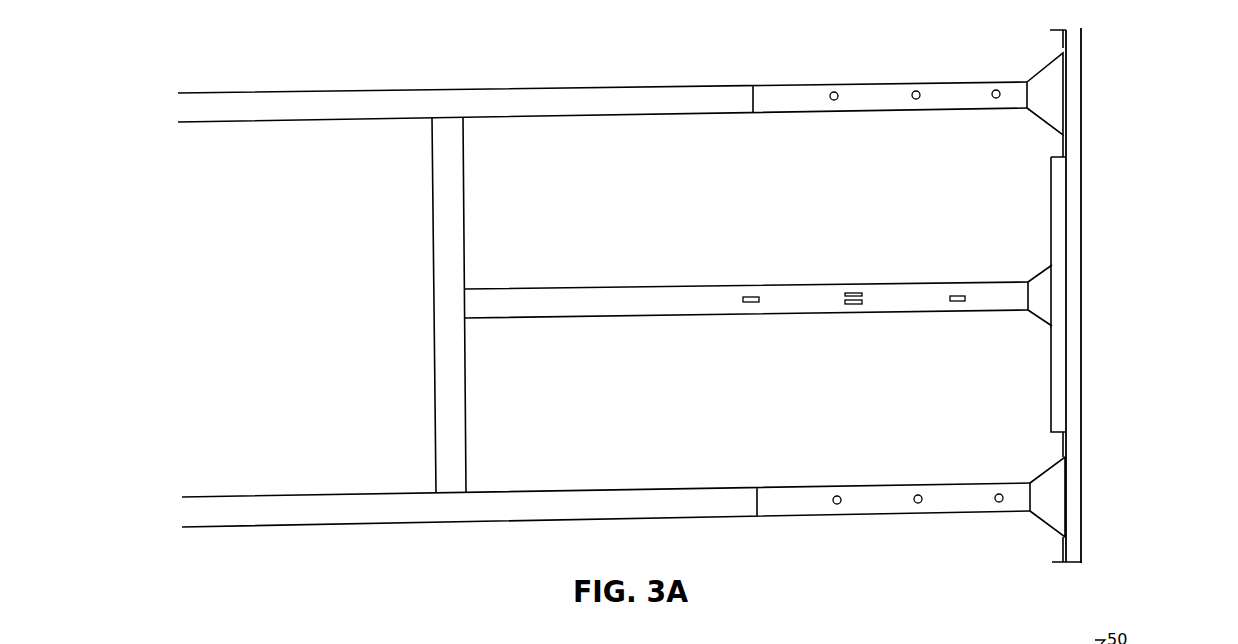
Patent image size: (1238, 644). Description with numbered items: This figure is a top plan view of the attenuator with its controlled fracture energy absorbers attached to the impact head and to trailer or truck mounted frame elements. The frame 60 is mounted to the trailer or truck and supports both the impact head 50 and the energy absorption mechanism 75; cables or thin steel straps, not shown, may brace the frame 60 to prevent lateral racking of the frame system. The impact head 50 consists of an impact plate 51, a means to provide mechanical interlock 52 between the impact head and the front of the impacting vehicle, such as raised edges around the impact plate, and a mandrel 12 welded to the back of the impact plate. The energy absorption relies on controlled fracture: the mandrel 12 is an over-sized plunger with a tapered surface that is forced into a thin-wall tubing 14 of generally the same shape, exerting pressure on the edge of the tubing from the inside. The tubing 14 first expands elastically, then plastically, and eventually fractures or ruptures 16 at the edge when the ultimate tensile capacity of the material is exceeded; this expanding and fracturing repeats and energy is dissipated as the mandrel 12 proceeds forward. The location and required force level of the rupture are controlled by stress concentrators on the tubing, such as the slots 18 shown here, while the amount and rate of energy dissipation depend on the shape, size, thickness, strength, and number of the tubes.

The mandrel 12 is at (1038, 320).
The thin-wall tubing 14 is at (660, 286).
The fracture 16 is at (913, 100).
The slots 18 is at (752, 297).
The impact head 50 is at (1123, 262).
The impact plate 51 is at (1060, 208).
The means to provide mechanical interlock 52 is at (1082, 120).
The frame 60 is at (367, 492).
The energy absorption mechanism 75 is at (543, 490).